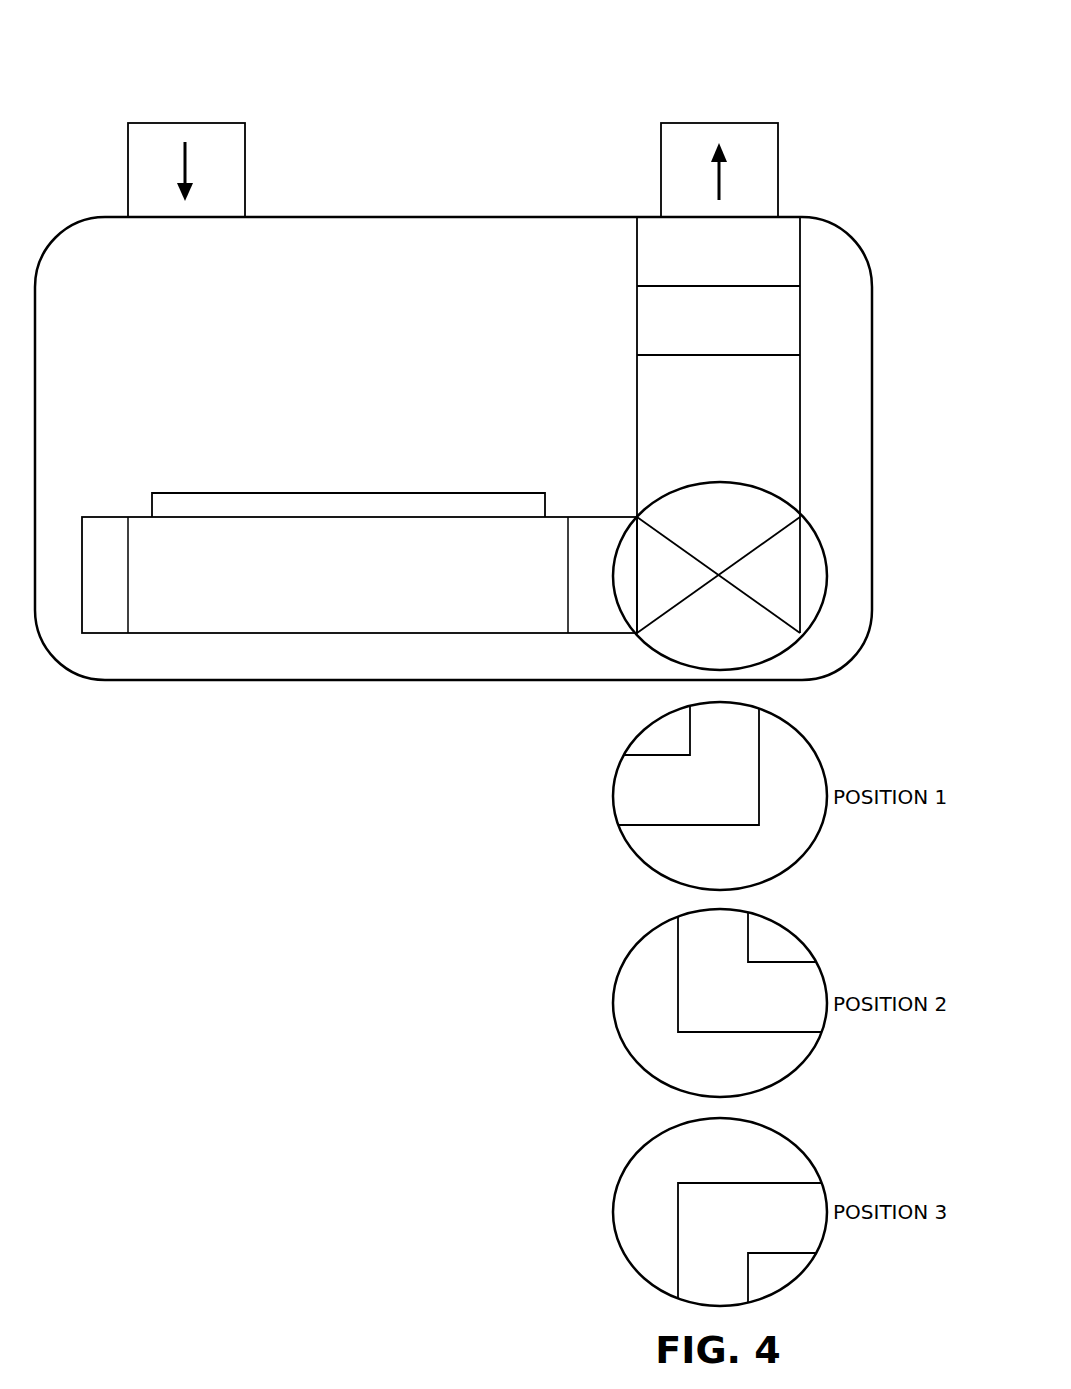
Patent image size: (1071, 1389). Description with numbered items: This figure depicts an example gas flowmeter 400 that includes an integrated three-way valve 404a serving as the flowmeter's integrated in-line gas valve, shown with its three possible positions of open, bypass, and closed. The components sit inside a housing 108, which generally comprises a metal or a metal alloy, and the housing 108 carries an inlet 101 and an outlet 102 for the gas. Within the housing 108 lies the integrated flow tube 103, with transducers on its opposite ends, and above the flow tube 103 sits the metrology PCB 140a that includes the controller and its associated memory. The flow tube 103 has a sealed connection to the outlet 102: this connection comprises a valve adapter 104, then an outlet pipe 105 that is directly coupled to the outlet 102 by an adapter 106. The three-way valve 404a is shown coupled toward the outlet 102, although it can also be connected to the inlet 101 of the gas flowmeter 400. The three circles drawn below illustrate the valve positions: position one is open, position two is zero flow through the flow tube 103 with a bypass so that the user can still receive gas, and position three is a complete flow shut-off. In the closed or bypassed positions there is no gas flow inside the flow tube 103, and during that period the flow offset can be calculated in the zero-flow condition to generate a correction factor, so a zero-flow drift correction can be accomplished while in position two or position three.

The gas flowmeter 400 is at (531, 55).
The inlet 101 is at (128, 170).
The outlet 102 is at (780, 170).
The flow tube 103 is at (380, 608).
The valve adapter 104 is at (637, 423).
The outlet pipe 105 is at (647, 330).
The adapter 106 is at (647, 246).
The housing 108 is at (385, 217).
The metrology PCB 140a is at (348, 493).
The three-way valve 404a is at (720, 482).